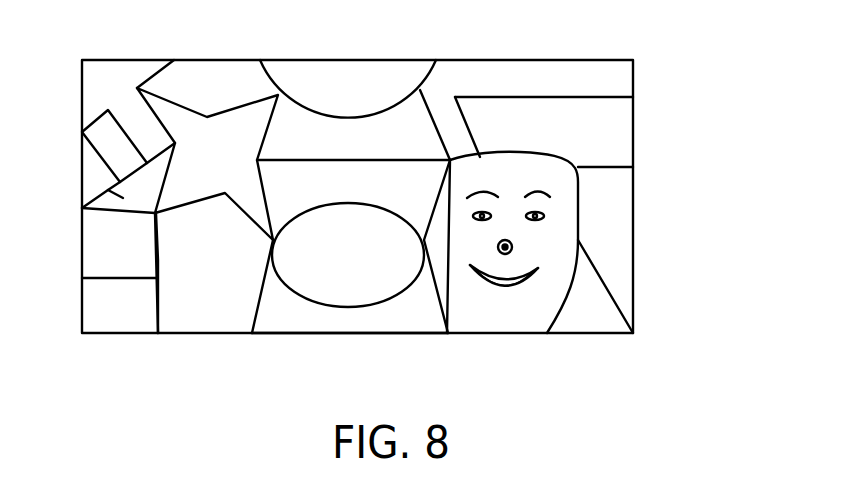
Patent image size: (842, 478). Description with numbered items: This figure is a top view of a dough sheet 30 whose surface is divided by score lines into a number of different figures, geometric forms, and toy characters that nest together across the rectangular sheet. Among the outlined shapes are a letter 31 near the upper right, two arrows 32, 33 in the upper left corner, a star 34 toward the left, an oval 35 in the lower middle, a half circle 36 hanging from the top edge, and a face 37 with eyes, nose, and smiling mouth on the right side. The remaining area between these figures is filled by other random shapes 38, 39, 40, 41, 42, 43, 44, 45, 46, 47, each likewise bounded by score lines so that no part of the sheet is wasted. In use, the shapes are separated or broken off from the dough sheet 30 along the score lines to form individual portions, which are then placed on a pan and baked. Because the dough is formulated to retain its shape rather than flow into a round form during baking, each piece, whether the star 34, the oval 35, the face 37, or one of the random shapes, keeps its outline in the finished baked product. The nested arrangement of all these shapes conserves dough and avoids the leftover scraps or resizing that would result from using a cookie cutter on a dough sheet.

The dough sheet 30 is at (674, 144).
The letter 31 is at (500, 80).
The arrow 32 is at (110, 82).
The arrow 33 is at (108, 190).
The star 34 is at (205, 166).
The oval 35 is at (335, 266).
The half circle 36 is at (342, 102).
The face 37 is at (499, 336).
The random shape 38 is at (103, 256).
The random shape 39 is at (103, 319).
The random shape 40 is at (194, 281).
The random shape 41 is at (222, 99).
The random shape 42 is at (354, 156).
The random shape 43 is at (345, 196).
The random shape 44 is at (547, 142).
The random shape 45 is at (622, 232).
The random shape 46 is at (602, 317).
The random shape 47 is at (350, 338).